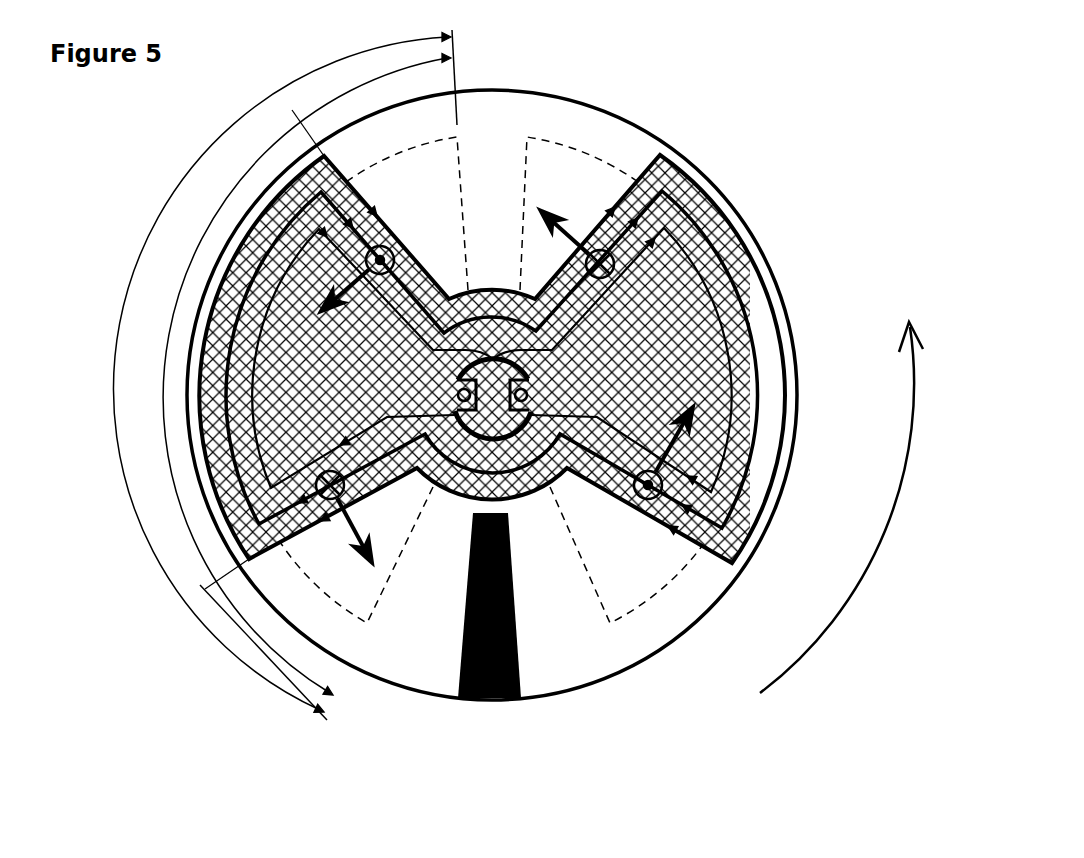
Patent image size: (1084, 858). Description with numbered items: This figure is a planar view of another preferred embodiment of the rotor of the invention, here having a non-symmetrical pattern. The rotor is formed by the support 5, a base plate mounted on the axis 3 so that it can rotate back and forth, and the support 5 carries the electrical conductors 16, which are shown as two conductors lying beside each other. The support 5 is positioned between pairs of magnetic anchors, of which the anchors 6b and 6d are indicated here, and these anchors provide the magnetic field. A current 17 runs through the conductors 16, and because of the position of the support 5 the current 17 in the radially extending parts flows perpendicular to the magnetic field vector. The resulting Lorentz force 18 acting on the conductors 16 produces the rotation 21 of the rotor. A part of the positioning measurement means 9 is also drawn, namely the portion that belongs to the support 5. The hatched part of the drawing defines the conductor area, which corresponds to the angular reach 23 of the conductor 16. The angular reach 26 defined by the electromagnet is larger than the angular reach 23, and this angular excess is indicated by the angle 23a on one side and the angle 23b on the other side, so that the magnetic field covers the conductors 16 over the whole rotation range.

The support 5 is at (535, 105).
The magnetic anchor 6b is at (443, 193).
The magnetic anchor 6d is at (578, 168).
The angle 23b is at (402, 77).
The angle 23a is at (266, 652).
The angular reach 26 is at (272, 373).
The angular reach 23 is at (296, 375).
The current 17 is at (487, 360).
The Lorentz force 18 is at (503, 378).
The axis 3 is at (507, 372).
The electrical conductor 16 is at (530, 388).
The rotation 21 is at (841, 507).
The positioning measurement means 9 is at (522, 683).